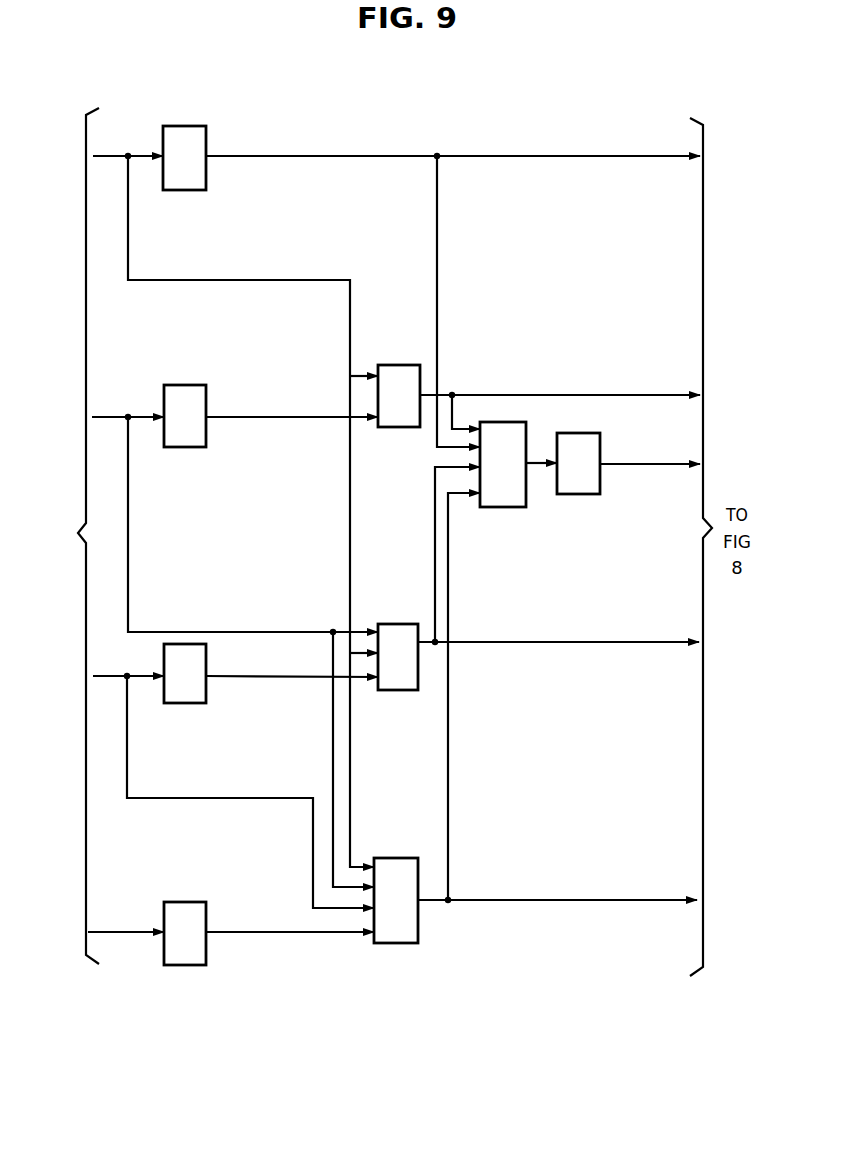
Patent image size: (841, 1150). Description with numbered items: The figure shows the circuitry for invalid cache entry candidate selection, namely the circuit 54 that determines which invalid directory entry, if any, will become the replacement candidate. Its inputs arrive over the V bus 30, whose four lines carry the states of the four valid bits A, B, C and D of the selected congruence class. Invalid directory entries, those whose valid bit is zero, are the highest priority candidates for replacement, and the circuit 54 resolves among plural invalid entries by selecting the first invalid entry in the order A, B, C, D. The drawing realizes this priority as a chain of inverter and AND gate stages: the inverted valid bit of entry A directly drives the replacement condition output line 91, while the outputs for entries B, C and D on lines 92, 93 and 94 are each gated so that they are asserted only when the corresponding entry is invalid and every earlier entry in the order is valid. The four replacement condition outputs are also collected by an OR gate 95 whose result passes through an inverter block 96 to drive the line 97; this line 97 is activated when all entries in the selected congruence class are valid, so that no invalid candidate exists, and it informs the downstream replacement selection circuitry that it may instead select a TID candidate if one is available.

The V bus 30 is at (53, 536).
The invalid cache entry candidate selection circuit 54 is at (394, 583).
The I REPL CND-A output line 91 is at (617, 160).
The I REPL CND-D output line from AND gate 92 is at (485, 392).
The I REPL CND-C output line 93 is at (600, 645).
The I REPL CND-D output line from lower AND gate 94 is at (582, 902).
The OR gate ( =1) 95 is at (500, 507).
The latch / buffer box 96 is at (587, 494).
The all-entries-valid line 97 is at (684, 470).